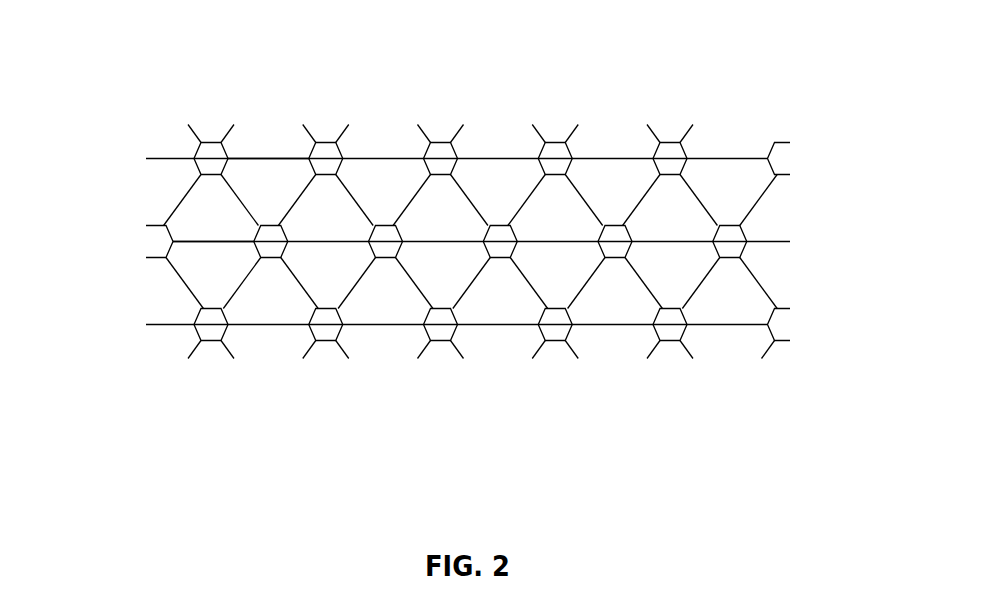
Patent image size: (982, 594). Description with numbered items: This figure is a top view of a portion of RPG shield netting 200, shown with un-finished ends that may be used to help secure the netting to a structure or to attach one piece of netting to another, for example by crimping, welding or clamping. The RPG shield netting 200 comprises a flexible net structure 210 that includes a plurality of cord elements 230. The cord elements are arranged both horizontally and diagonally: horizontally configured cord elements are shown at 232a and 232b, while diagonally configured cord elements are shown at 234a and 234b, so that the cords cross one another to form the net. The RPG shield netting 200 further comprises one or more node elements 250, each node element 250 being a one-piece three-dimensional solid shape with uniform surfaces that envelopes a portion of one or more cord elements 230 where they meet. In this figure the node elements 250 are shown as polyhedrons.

The RPG shield netting 200 is at (198, 76).
The flexible net structure 210 is at (613, 158).
The cord elements 230 is at (760, 203).
The horizontally configured cord element 232a is at (268, 158).
The horizontally configured cord element 232b is at (198, 242).
The diagonally configured cord element 234a is at (236, 288).
The diagonally configured cord element 234b is at (352, 288).
The node element 250 is at (670, 327).